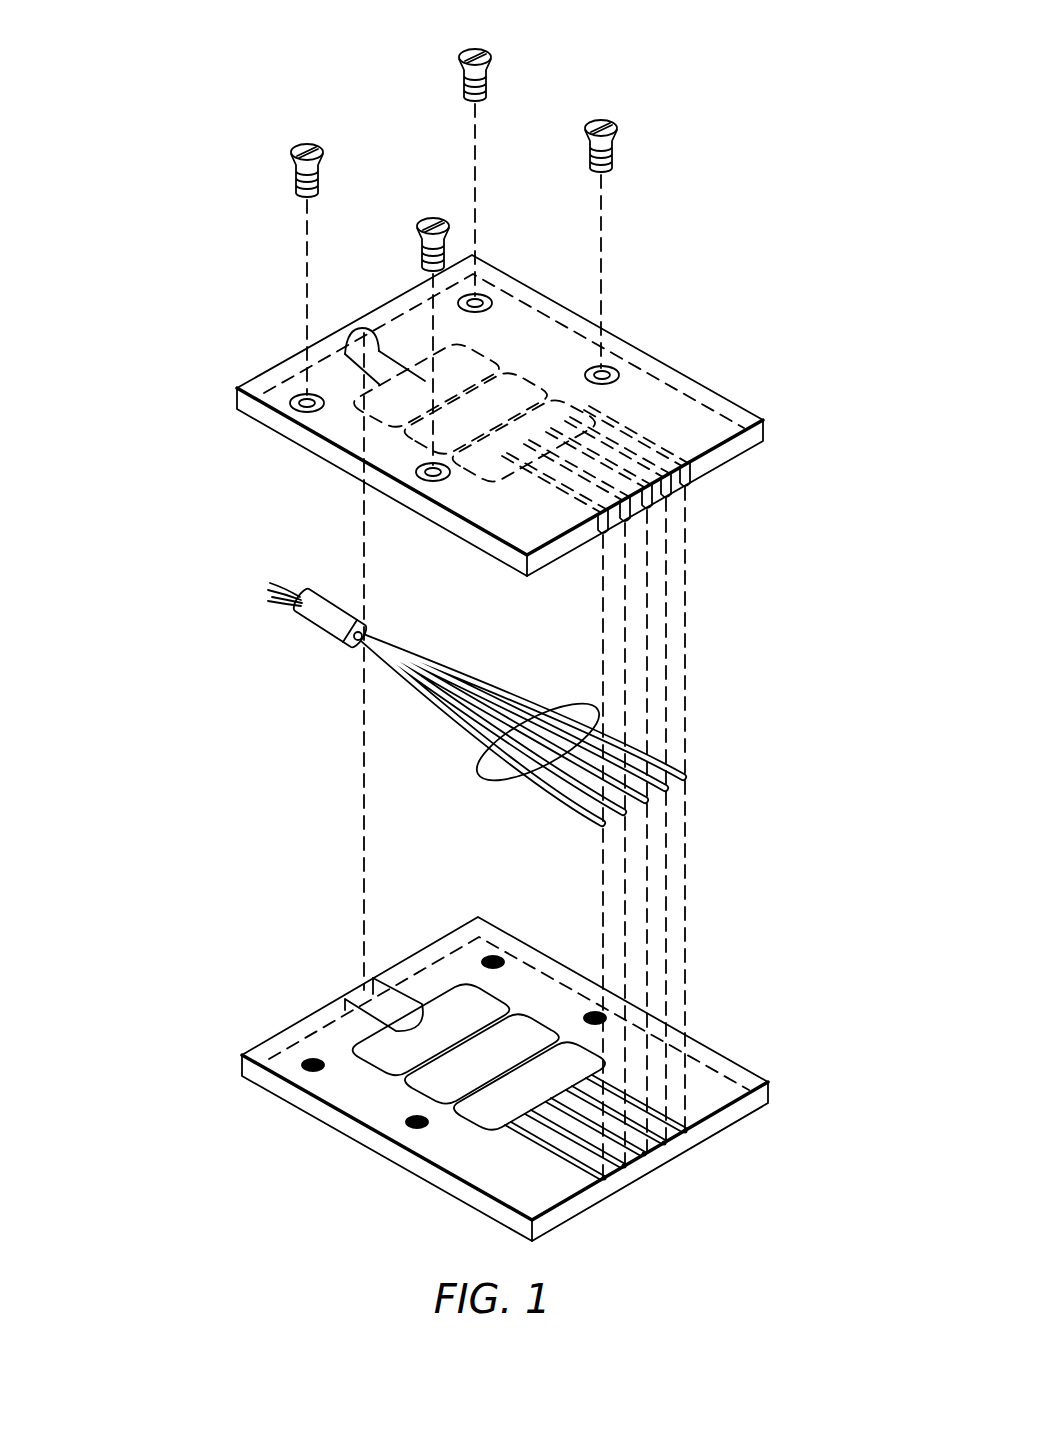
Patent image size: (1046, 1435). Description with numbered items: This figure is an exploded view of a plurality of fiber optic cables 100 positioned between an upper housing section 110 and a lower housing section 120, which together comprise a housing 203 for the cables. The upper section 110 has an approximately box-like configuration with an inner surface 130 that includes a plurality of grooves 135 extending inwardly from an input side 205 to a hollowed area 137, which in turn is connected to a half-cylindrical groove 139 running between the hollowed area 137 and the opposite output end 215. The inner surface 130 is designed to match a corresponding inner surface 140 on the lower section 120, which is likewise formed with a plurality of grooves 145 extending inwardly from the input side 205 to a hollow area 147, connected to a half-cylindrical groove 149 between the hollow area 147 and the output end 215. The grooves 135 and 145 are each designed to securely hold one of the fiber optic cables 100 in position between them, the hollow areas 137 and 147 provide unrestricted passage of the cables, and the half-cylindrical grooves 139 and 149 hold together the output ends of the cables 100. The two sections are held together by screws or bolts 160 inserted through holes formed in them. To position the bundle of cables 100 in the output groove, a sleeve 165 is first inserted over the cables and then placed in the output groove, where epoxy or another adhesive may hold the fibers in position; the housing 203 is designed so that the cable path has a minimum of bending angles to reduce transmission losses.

The fiber optic cables 100 is at (475, 778).
The upper housing section 110 is at (225, 388).
The lower housing section 120 is at (228, 1053).
The inner surface 130 is at (742, 457).
The grooves 135 is at (665, 520).
The hollowed area 137 is at (535, 393).
The half-cylindrical groove 139 is at (383, 351).
The inner surface 140 is at (700, 1087).
The grooves 145 is at (657, 1163).
The hollow area 147 is at (533, 1030).
The half-cylindrical groove 149 is at (375, 1003).
The screws or bolts 160 is at (598, 117).
The sleeve 165 is at (313, 612).
The housing 203 is at (225, 500).
The input side 205 is at (805, 447).
The output end 215 is at (272, 333).